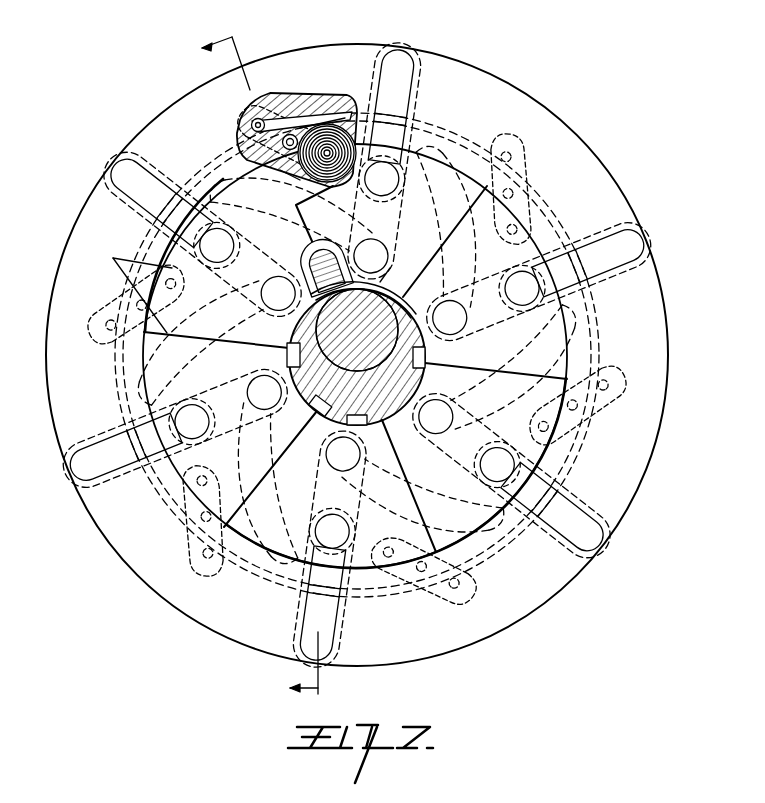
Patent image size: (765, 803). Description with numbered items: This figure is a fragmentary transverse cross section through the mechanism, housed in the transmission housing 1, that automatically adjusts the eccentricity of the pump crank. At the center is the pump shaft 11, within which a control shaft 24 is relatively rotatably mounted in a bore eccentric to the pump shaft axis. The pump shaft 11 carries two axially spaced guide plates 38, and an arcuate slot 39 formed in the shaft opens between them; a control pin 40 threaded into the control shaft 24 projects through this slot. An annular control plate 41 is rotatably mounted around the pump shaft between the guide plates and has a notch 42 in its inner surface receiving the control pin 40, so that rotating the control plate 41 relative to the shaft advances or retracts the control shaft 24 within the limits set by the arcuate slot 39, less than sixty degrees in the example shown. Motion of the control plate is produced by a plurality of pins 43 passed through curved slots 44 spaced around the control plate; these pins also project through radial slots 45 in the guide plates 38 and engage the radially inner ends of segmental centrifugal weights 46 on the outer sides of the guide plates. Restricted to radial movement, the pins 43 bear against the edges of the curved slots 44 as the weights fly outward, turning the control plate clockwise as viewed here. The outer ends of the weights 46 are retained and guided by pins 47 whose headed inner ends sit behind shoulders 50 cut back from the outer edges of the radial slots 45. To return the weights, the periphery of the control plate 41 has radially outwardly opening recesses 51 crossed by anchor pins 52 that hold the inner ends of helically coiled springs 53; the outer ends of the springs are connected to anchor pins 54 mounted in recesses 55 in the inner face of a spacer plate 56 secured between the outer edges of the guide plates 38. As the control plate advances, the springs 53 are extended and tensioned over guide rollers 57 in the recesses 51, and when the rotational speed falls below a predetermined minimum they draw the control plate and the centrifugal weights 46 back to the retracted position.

The transmission housing 1 is at (250, 367).
The pump shaft 11 is at (322, 402).
The control shaft 24 is at (380, 375).
The guide plates 38 is at (165, 118).
The arcuate slot 39 is at (395, 262).
The control pin 40 is at (300, 262).
The control plate 41 is at (403, 297).
The notch 42 is at (302, 295).
The pins 43 is at (433, 436).
The curved slots 44 is at (178, 374).
The radial slots 45 is at (488, 318).
The centrifugal weights 46 is at (130, 291).
The pins 47 is at (350, 532).
The shoulders 50 is at (112, 182).
The recesses 51 is at (345, 118).
The anchor pins 52 is at (330, 152).
The helically coiled springs 53 is at (329, 150).
The anchor pins 54 is at (273, 118).
The recesses 55 is at (105, 322).
The spacer plate 56 is at (294, 168).
The guide rollers 57 is at (283, 160).